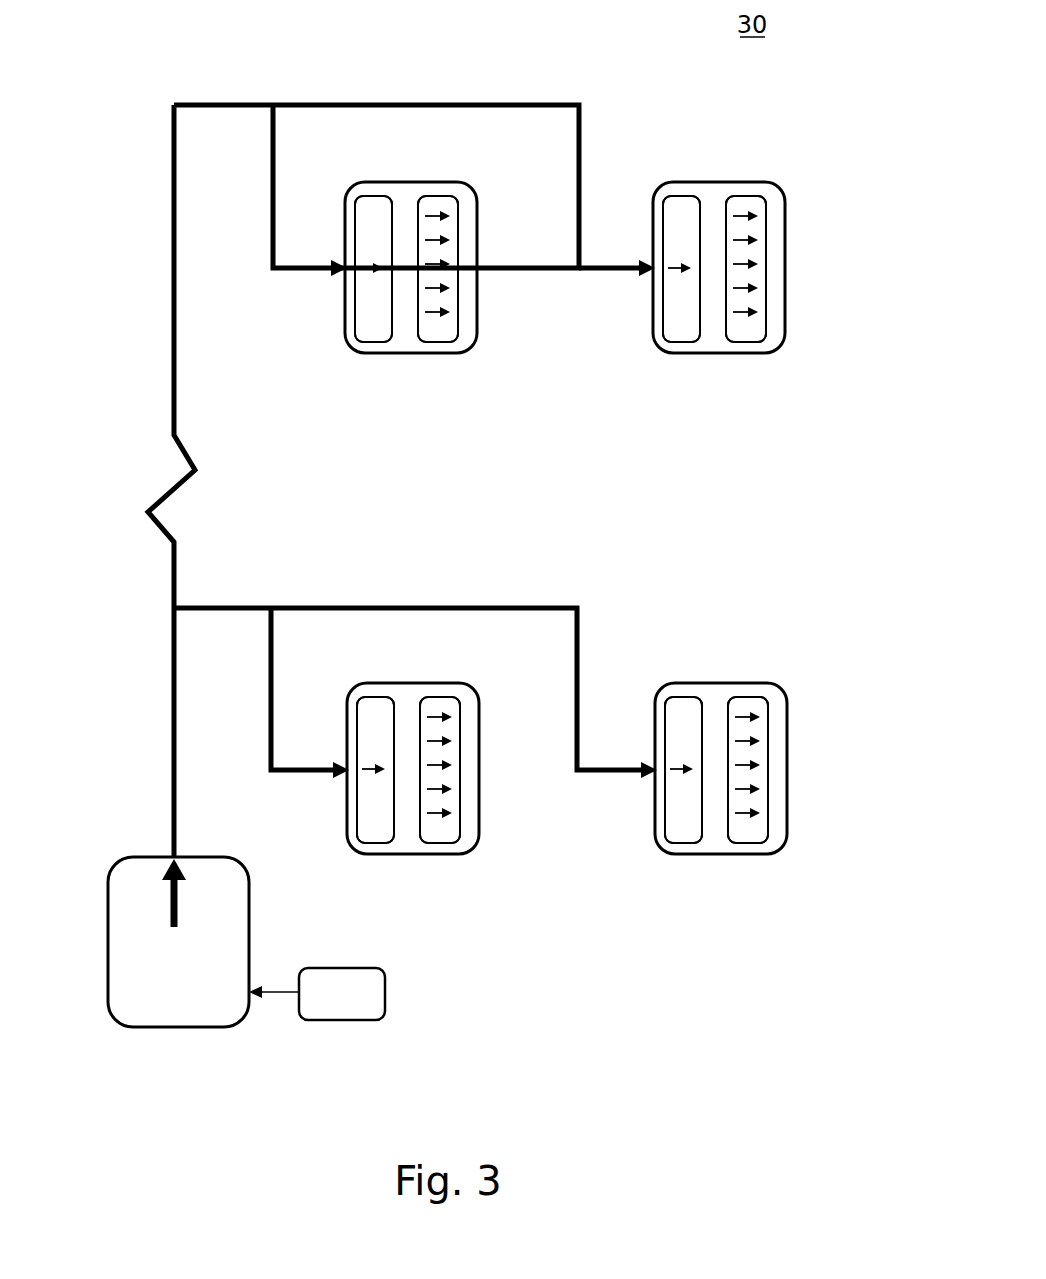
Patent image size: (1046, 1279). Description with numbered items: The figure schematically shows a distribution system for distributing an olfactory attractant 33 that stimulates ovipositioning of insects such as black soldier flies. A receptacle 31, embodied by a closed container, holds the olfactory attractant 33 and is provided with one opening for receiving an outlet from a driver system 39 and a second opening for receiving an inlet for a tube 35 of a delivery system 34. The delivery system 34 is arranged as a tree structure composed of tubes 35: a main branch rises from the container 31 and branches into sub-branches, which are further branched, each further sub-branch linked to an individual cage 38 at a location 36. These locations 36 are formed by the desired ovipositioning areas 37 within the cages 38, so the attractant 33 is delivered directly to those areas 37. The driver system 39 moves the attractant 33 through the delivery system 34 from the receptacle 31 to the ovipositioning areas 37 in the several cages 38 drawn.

The receptacle 31 is at (250, 890).
The olfactory attractant 33 is at (123, 952).
The delivery system 34 is at (140, 336).
The tubes 35 is at (192, 107).
The locations 36 is at (343, 260).
The ovipositioning areas 37 is at (455, 335).
The cages 38 is at (477, 225).
The driver system 39 is at (368, 1021).